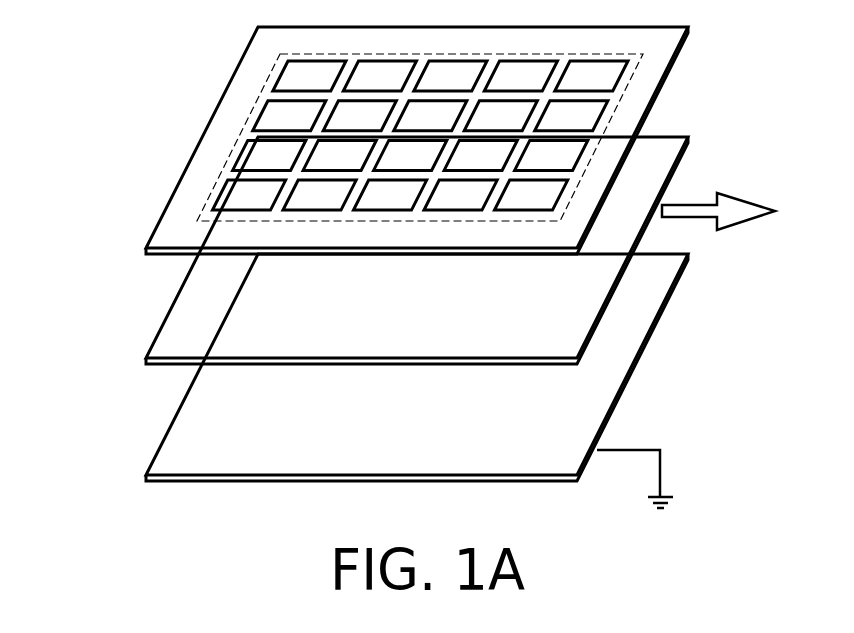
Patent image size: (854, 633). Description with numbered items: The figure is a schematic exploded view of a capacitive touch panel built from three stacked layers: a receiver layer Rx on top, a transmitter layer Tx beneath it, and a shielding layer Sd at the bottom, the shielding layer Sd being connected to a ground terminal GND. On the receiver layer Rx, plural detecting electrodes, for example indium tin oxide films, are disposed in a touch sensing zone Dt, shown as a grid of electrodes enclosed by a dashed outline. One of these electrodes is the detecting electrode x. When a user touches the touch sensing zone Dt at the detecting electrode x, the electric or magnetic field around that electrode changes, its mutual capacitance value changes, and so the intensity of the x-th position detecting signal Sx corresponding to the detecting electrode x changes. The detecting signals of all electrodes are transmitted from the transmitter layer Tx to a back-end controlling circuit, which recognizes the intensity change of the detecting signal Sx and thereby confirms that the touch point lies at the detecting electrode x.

The receiver layer Rx is at (188, 207).
The transmitter layer Tx is at (190, 332).
The shielding layer Sd is at (198, 452).
The touch sensing zone Dt is at (257, 112).
The detecting electrode x is at (399, 207).
The x-th position detecting signal Sx is at (737, 211).
The ground terminal GND is at (668, 479).